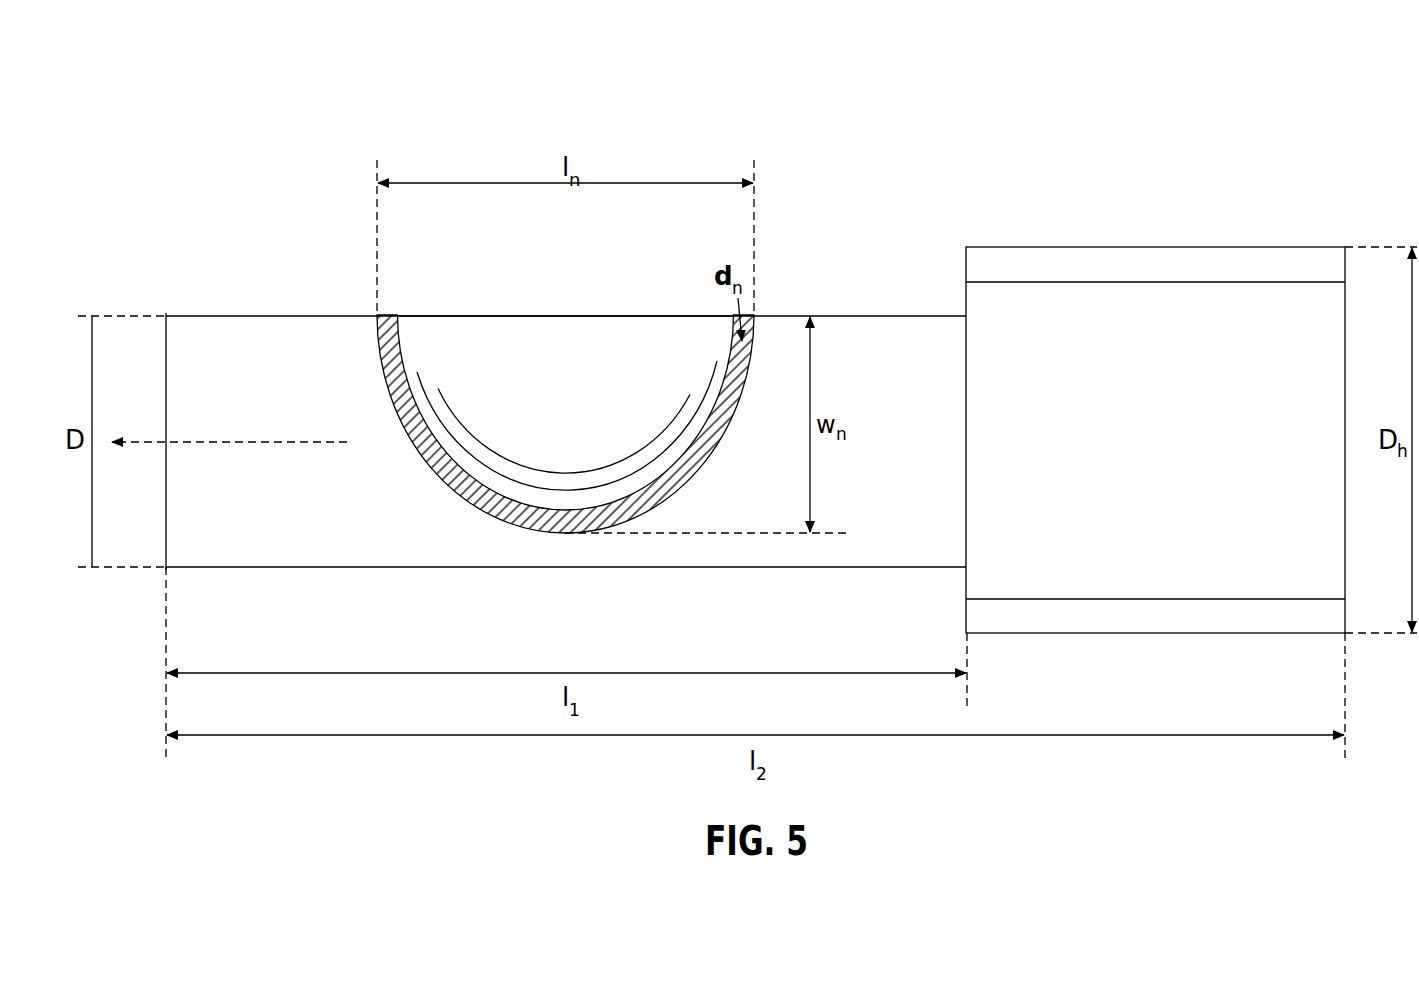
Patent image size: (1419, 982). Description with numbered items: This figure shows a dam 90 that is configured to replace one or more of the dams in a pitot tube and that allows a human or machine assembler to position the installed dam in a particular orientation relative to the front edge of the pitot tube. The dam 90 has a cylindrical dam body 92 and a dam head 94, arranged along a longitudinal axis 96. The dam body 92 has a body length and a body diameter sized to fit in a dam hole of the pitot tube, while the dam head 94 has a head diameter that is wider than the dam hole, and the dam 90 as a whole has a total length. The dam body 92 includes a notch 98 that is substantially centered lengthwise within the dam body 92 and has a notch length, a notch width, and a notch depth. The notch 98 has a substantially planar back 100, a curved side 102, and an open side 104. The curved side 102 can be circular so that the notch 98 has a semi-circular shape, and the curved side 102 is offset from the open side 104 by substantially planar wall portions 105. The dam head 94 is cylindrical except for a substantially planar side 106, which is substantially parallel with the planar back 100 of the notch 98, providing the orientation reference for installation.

The dam 90 is at (1176, 119).
The dam body 92 is at (203, 316).
The dam head 94 is at (1063, 247).
The longitudinal axis 96 is at (128, 445).
The notch 98 is at (462, 283).
The planar back 100 is at (636, 335).
The curved side 102 is at (455, 492).
The open side 104 is at (553, 316).
The planar wall portions 105 is at (372, 353).
The planar side 106 is at (1132, 455).